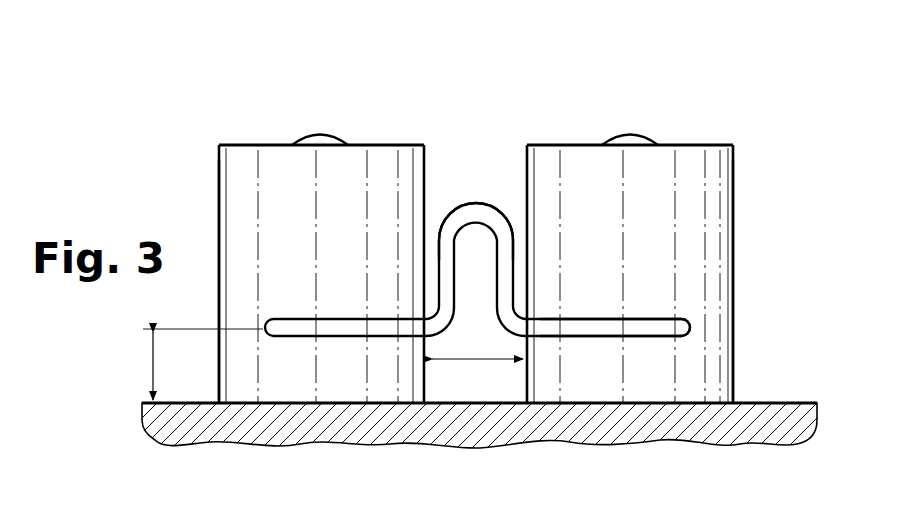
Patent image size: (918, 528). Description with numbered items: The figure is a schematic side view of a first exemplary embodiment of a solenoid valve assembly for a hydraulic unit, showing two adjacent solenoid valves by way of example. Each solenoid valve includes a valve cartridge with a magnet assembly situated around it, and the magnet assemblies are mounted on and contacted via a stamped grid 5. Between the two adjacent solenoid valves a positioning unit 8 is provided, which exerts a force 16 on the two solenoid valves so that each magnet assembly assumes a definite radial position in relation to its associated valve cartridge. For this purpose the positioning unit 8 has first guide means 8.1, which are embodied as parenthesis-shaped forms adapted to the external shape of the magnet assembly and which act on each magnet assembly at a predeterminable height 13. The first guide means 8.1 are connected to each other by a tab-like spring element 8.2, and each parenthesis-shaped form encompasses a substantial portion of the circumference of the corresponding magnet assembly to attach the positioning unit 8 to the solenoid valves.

The stamped grid 5 is at (770, 420).
The positioning unit 8 is at (446, 108).
The first guide means 8.1 is at (648, 326).
The tab-like spring element 8.2 is at (478, 204).
The predeterminable height 13 is at (152, 362).
The force 16 is at (476, 361).